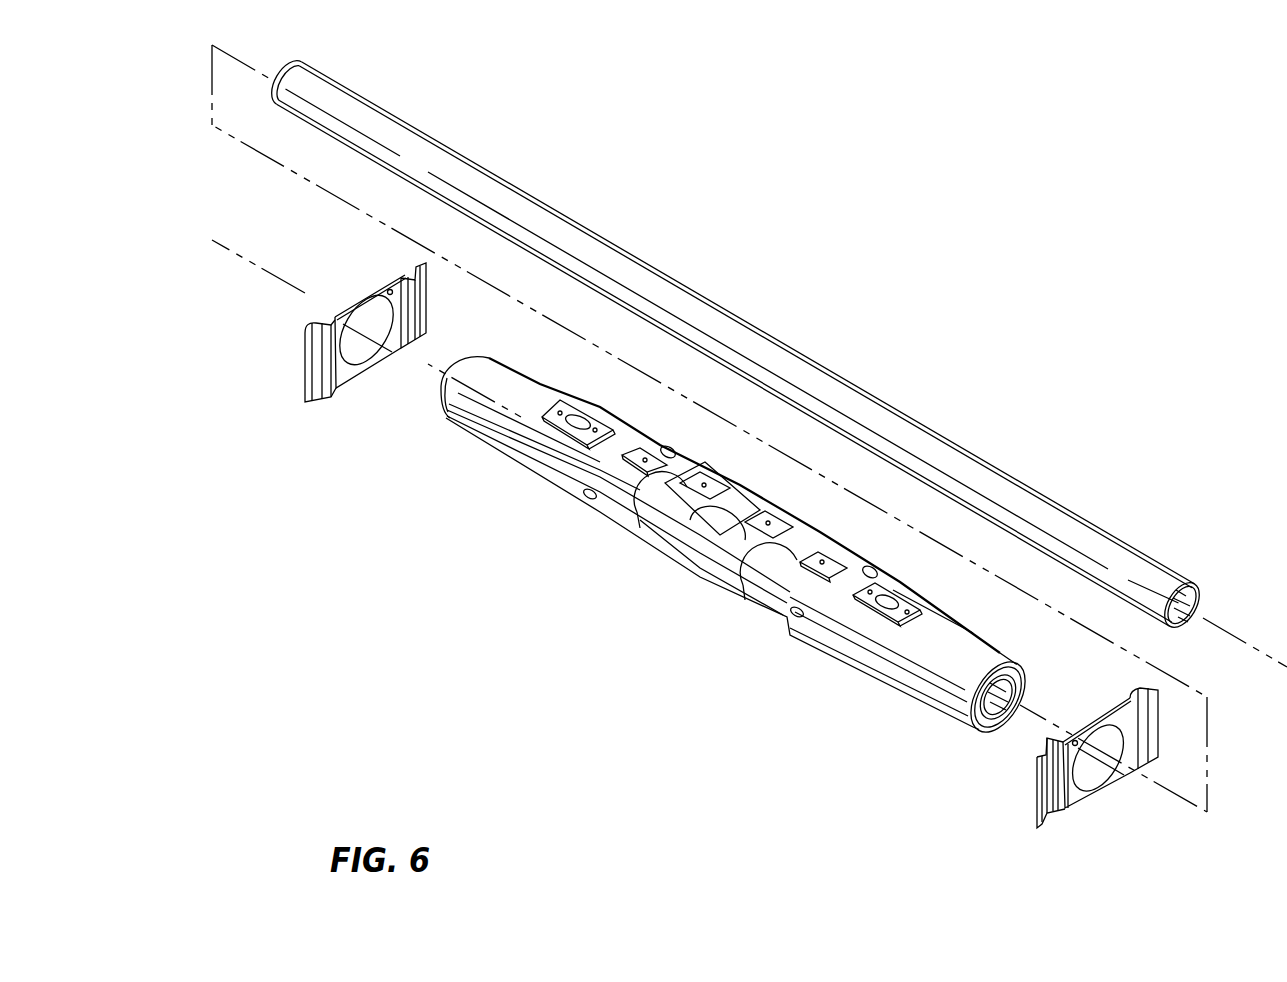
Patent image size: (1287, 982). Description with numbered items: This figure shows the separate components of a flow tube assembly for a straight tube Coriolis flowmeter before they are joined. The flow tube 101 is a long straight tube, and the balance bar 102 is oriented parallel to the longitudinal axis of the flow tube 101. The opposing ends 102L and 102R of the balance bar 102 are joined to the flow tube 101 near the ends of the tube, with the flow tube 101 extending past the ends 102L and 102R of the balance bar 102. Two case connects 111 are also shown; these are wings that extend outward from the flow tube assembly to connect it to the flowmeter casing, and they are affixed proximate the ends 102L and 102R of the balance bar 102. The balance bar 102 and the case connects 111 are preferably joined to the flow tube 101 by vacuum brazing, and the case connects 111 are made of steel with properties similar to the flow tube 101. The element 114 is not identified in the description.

The flow tube 101 is at (1063, 523).
The balance bar 102 is at (763, 552).
The end of balance bar 102L is at (498, 378).
The end of balance bar 102R is at (965, 650).
The case connect 111 is at (376, 288).
The threaded bore 114 is at (993, 722).